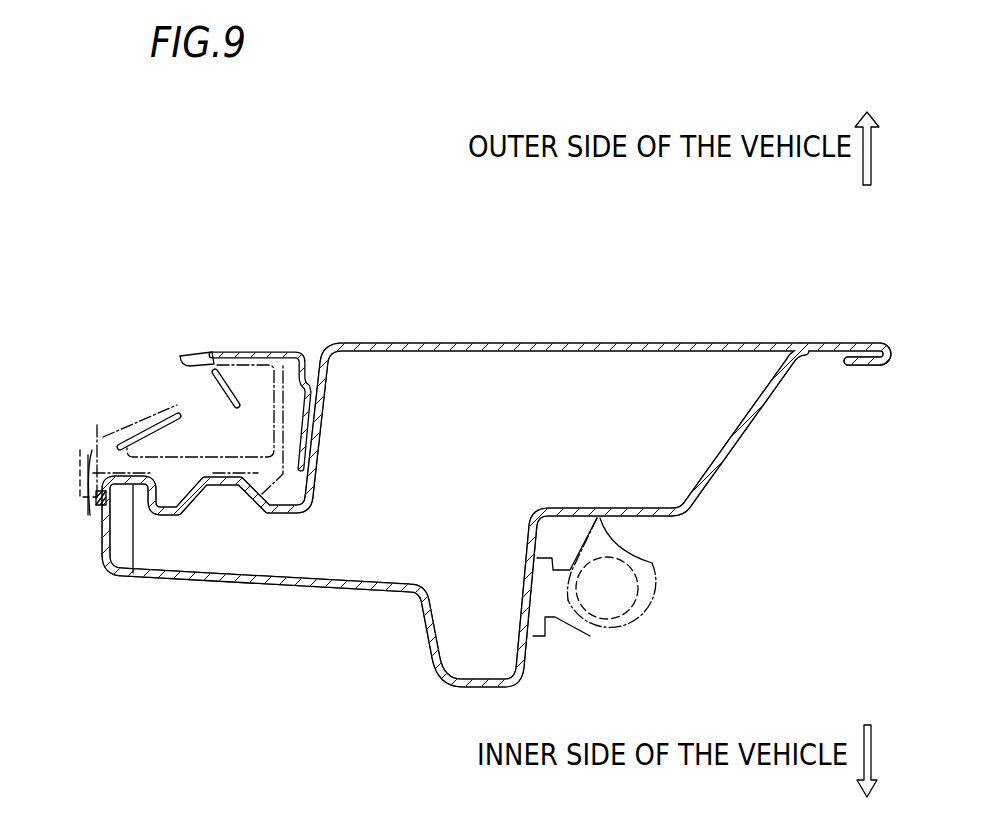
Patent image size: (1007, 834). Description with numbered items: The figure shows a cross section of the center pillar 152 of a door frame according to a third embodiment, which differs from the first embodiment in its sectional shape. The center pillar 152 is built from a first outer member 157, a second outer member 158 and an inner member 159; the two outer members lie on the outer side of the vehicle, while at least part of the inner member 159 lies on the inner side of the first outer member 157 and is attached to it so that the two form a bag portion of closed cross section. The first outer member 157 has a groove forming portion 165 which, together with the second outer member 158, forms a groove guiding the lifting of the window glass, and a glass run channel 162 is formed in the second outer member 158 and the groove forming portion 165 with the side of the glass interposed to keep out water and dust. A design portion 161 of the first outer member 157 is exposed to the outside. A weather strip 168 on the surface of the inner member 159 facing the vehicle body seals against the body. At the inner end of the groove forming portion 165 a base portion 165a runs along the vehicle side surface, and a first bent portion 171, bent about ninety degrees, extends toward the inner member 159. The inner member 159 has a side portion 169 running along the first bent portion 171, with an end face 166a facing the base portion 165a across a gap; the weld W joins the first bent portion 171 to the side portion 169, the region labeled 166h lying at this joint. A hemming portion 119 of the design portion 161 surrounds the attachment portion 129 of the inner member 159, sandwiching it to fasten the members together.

The center pillar 152 is at (640, 255).
The first outer member 157 is at (712, 342).
The second outer member 158 is at (273, 338).
The inner member 159 is at (388, 620).
The design portion 161 is at (515, 343).
The glass run channel 162 is at (117, 433).
The groove forming portion 165 is at (205, 505).
The base portion 165a is at (135, 490).
The end face 166a is at (100, 503).
The bent portion of outer panel 166h is at (106, 507).
The weather strip 168 is at (648, 576).
The side portion 169 is at (100, 538).
The first bent portion 171 is at (93, 492).
The hemming portion 119 is at (851, 345).
The attachment portion 129 is at (826, 363).
The weld W is at (92, 500).